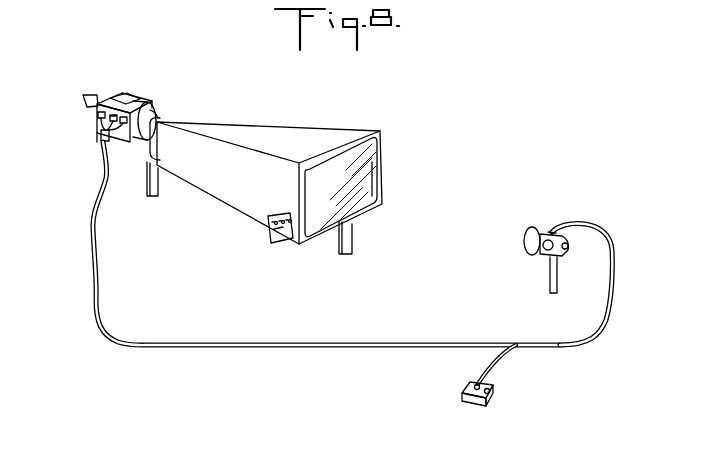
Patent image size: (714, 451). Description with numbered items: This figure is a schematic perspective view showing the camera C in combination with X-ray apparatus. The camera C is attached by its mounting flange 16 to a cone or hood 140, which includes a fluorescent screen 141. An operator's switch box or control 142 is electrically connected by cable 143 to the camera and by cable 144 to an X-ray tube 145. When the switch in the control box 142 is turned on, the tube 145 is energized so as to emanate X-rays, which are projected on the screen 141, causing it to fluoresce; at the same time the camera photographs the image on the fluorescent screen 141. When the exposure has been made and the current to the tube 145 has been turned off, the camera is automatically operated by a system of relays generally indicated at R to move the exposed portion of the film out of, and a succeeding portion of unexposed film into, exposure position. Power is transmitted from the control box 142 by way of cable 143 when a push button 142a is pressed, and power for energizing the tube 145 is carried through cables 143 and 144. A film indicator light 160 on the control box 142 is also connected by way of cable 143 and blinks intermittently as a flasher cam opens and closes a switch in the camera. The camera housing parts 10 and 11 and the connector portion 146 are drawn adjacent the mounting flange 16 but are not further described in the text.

The camera C is at (129, 87).
The connector housing 10 is at (154, 93).
The connector body 11 is at (82, 137).
The mounting flange 16 is at (167, 113).
The system of relays R is at (88, 121).
The plug 146 is at (103, 137).
The cone or hood 140 is at (278, 130).
The fluorescent screen 141 is at (372, 162).
The cable 143 is at (230, 344).
The cable 144 is at (613, 313).
The X-ray tube 145 is at (533, 230).
The switch box or control 142 is at (470, 385).
The push button 142a is at (502, 395).
The film indicator light 160 is at (478, 402).